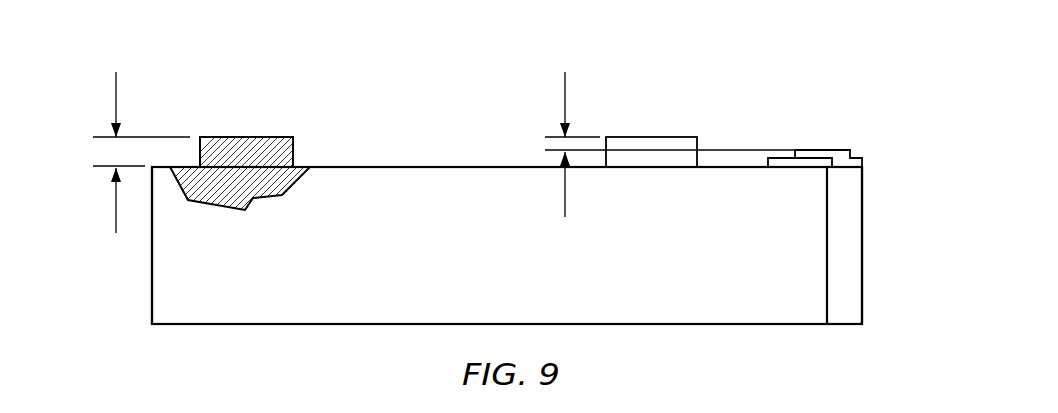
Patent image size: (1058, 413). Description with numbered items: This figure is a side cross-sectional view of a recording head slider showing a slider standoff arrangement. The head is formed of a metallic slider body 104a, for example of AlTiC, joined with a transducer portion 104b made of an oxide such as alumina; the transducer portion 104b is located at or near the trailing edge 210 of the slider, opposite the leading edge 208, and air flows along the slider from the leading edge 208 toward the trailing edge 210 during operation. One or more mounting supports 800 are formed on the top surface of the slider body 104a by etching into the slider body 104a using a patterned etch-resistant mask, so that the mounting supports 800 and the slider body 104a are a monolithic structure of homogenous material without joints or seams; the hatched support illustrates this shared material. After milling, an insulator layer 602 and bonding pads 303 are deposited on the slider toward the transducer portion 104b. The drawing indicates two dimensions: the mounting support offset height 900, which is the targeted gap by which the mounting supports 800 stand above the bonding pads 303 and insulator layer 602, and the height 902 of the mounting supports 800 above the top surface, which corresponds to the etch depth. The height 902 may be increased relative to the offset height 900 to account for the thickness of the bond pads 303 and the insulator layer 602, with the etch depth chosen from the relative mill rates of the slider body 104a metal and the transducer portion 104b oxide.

The slider body 104a is at (383, 312).
The transducer portion 104b is at (845, 313).
The leading edge 208 is at (154, 288).
The trailing edge 210 is at (862, 230).
The bonding pads 303 is at (828, 151).
The insulator layer 602 is at (780, 156).
The mounting supports 800 is at (259, 137).
The mounting support offset height 900 is at (669, 129).
The height of the mounting supports above the top surface 902 is at (141, 135).